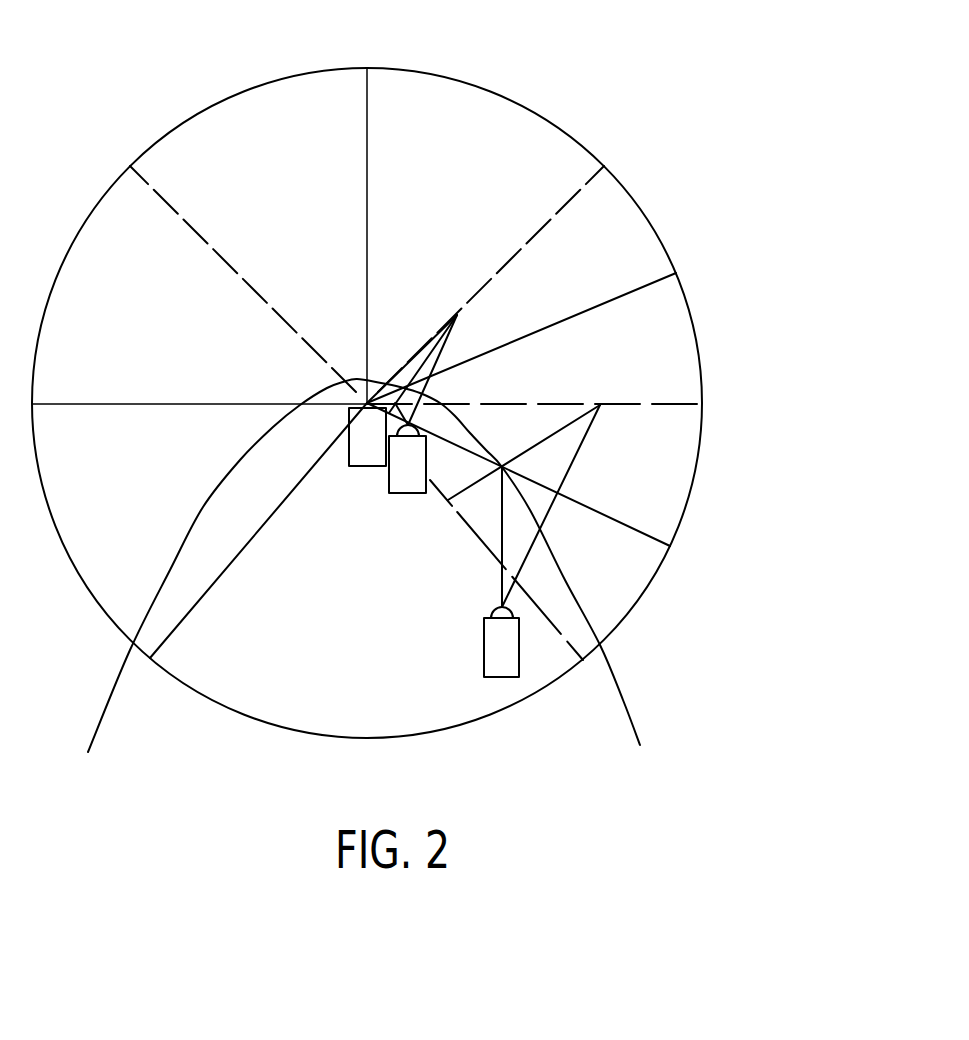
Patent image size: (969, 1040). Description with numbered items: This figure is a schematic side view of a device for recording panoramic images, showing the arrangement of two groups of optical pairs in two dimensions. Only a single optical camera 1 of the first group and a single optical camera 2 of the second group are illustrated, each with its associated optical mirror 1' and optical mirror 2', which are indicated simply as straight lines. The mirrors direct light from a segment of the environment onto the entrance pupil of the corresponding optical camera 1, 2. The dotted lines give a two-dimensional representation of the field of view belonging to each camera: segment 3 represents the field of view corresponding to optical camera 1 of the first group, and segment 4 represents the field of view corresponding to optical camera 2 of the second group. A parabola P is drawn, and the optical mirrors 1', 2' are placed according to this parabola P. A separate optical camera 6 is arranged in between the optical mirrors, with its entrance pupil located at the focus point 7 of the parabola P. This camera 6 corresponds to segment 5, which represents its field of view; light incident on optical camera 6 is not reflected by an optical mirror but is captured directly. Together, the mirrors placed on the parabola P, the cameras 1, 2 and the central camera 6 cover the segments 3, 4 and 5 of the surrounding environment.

The optical camera 1 is at (408, 456).
The optical mirror 1' is at (303, 436).
The optical camera 2 is at (507, 556).
The optical mirror 2' is at (515, 494).
The segment 3 is at (652, 220).
The segment 4 is at (697, 483).
The segment 5 is at (512, 98).
The optical camera 6 is at (365, 458).
The focus point 7 is at (367, 400).
The parabola P is at (628, 712).